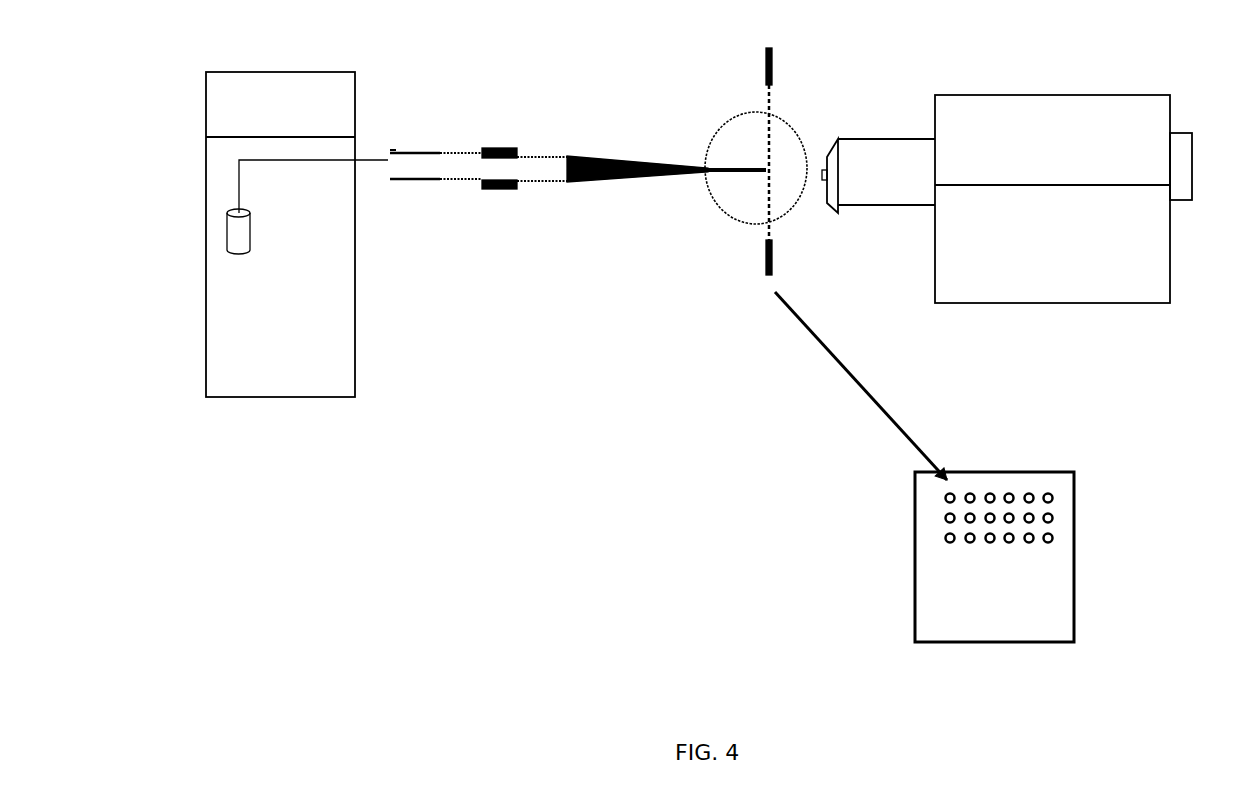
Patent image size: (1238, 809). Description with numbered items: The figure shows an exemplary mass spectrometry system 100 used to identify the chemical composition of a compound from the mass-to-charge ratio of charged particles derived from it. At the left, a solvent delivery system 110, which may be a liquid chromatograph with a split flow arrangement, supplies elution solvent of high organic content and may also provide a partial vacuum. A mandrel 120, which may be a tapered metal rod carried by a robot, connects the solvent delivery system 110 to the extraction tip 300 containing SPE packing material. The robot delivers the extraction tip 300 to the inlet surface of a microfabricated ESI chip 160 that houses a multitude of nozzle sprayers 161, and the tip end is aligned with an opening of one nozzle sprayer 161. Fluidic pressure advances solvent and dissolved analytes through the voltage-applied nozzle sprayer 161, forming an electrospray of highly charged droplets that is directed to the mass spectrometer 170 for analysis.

The mass spectrometry system 100 is at (457, 93).
The solvent delivery system 110 is at (204, 318).
The mandrel 120 is at (413, 185).
The extraction tip 300 is at (613, 155).
The microfabricated ESI chip 160 is at (760, 77).
The nozzle sprayer 161 is at (1030, 491).
The mass spectrometer 170 is at (1013, 93).